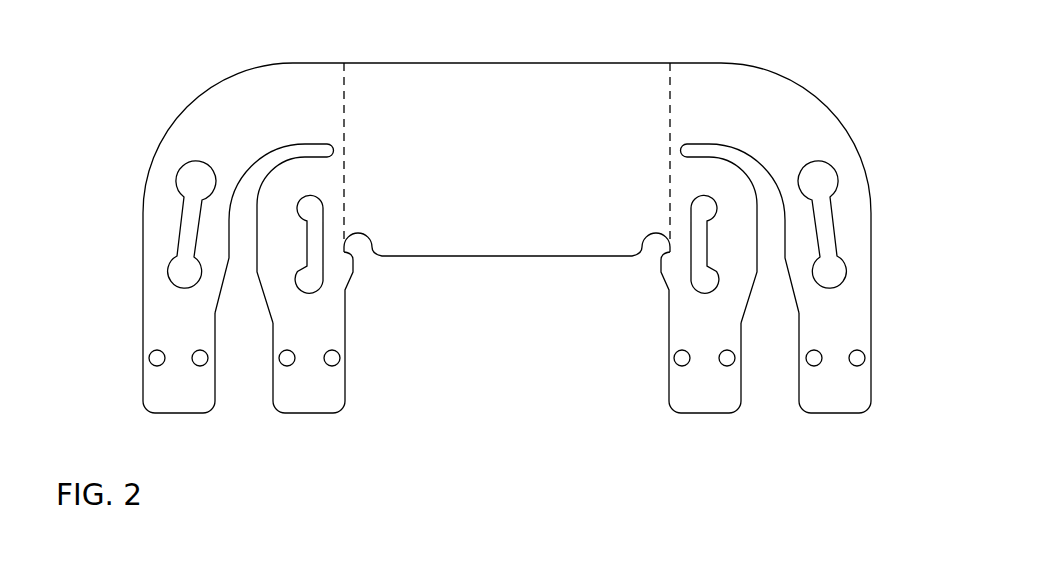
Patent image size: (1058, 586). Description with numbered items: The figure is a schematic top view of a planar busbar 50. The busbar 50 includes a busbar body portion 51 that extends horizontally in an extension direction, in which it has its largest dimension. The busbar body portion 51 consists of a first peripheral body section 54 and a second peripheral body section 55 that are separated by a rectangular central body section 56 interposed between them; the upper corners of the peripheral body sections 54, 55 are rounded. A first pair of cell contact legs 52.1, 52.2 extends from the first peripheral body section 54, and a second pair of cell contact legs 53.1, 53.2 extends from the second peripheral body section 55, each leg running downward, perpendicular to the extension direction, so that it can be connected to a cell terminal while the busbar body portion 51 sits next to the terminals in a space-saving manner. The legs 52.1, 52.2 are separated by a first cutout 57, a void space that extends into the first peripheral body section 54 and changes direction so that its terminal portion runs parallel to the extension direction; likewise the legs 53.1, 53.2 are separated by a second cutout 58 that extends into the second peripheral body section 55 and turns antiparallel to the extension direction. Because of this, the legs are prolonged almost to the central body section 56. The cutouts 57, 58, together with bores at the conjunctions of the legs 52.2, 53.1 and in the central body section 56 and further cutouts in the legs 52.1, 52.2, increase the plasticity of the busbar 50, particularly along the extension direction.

The busbar 50 is at (502, 213).
The busbar body portion 51 is at (609, 76).
The cell contact leg 52.1 is at (170, 383).
The cell contact leg 52.2 is at (317, 384).
The cell contact leg 53.1 is at (700, 387).
The cell contact leg 53.2 is at (845, 385).
The first peripheral body section 54 is at (250, 107).
The second peripheral body section 55 is at (753, 102).
The central body section 56 is at (428, 92).
The first cutout 57 is at (250, 321).
The second cutout 58 is at (773, 313).